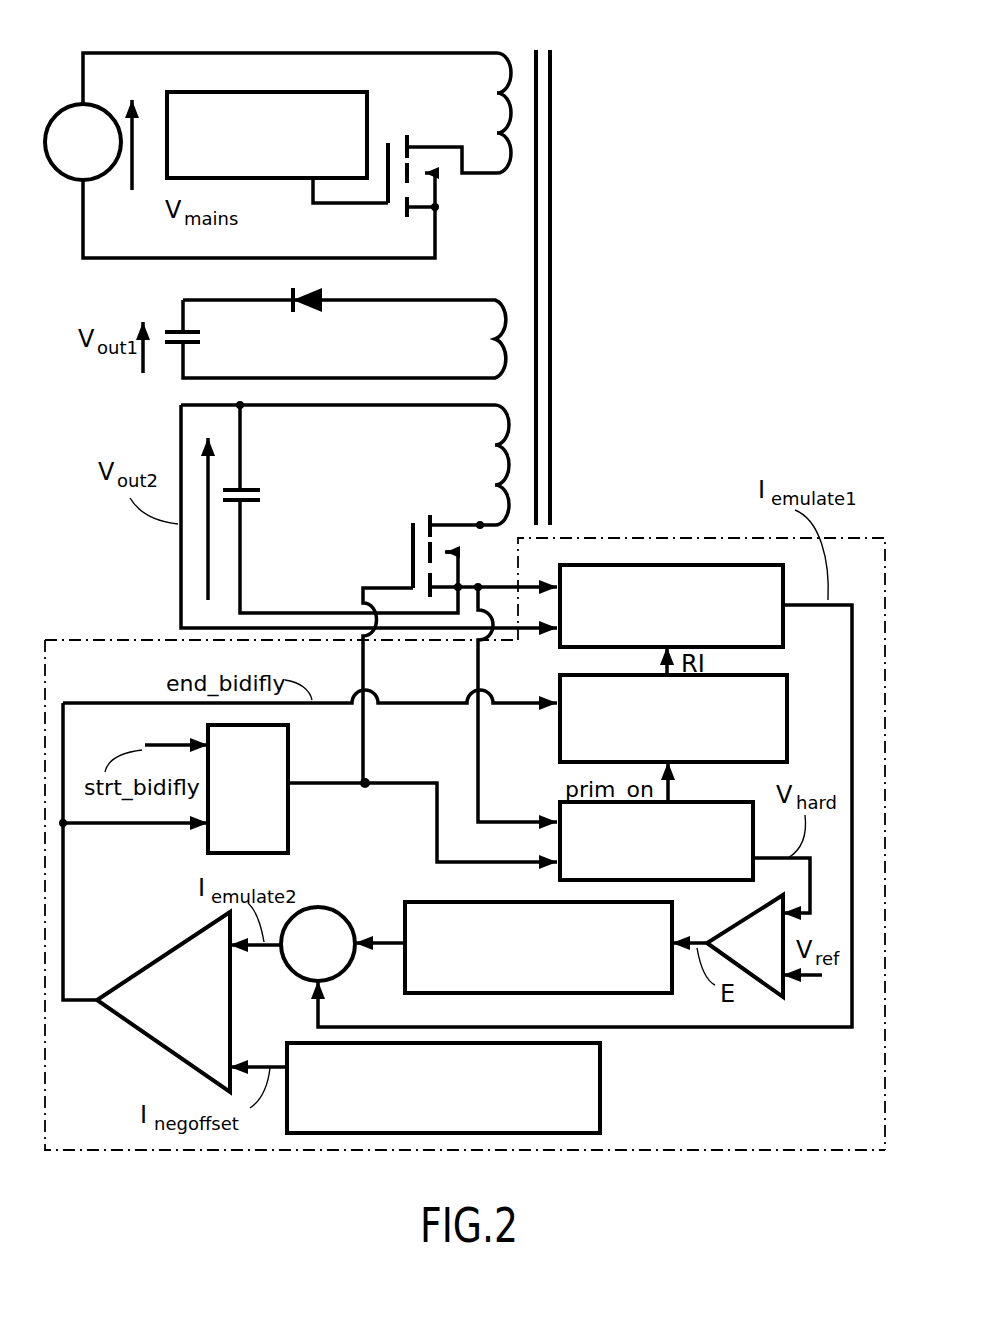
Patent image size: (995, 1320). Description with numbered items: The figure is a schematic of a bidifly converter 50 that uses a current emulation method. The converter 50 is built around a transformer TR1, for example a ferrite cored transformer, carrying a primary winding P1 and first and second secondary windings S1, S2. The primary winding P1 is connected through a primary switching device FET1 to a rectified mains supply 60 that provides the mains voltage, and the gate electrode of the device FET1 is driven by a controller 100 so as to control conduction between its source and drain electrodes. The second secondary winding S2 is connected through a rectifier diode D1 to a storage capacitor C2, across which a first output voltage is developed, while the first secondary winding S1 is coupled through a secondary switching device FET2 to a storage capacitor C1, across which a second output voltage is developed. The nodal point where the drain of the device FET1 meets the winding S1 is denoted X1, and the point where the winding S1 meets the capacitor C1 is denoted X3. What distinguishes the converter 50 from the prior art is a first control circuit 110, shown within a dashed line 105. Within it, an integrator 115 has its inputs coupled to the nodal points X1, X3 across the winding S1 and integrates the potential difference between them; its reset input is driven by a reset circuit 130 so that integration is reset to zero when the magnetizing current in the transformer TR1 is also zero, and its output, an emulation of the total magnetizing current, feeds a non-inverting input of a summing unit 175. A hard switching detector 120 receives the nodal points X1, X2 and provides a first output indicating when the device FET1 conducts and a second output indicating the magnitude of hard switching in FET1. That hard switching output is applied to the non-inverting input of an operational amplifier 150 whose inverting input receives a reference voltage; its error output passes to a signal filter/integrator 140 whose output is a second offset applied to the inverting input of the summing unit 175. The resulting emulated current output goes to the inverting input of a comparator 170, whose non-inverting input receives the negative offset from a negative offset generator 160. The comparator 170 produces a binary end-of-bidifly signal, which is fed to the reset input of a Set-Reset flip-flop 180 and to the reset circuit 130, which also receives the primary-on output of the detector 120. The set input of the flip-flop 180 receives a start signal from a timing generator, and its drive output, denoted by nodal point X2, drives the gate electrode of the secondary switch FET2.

The bidifly converter 50 is at (690, 193).
The rectified mains supply 60 is at (78, 140).
The controller 100 is at (267, 135).
The dashed line 105 is at (120, 642).
The first control circuit 110 is at (658, 545).
The integrator 115 is at (671, 606).
The hard switching detector 120 is at (656, 841).
The reset circuit 130 is at (673, 718).
The signal filter/integrator 140 is at (538, 947).
The operational amplifier 150 is at (765, 968).
The negative offset generator 160 is at (580, 1108).
The comparator 170 is at (163, 1002).
The summing unit 175 is at (300, 944).
The Set-Reset flip-flop 180 is at (222, 838).
The transformer TR1 is at (558, 222).
The primary winding P1 is at (459, 113).
The first secondary winding S1 is at (345, 465).
The second secondary winding S2 is at (344, 339).
The primary switching device FET1 is at (412, 177).
The secondary switching device FET2 is at (401, 649).
The storage capacitor C1 is at (340, 507).
The storage capacitor C2 is at (206, 340).
The rectifier diode D1 is at (330, 315).
The nodal point X1 is at (448, 525).
The nodal point X2 is at (365, 755).
The nodal point X3 is at (181, 440).